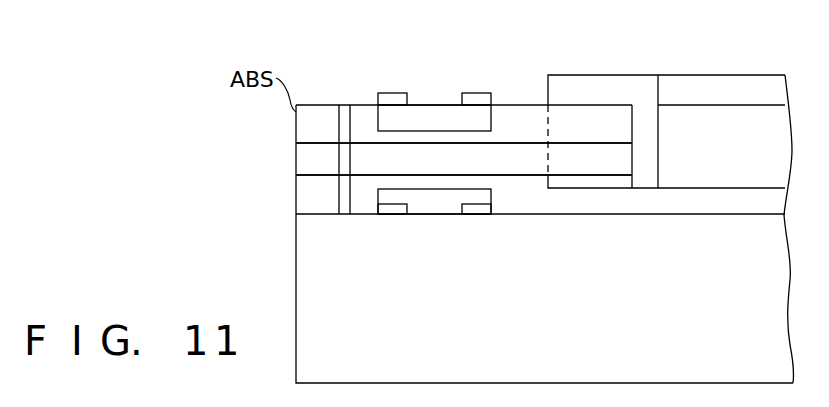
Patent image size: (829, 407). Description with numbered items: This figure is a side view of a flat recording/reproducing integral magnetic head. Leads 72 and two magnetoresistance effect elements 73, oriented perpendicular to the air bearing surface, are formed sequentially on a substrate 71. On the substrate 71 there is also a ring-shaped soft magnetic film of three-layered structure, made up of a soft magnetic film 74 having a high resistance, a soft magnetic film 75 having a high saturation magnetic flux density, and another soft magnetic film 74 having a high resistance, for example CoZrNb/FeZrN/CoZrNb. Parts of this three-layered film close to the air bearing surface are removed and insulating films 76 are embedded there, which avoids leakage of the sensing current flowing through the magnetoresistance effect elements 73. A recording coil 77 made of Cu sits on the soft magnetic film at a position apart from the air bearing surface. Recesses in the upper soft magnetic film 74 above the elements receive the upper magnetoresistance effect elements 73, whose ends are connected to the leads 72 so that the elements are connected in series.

The substrate 71 is at (305, 259).
The leads 72 is at (395, 97).
The magnetoresistance effect elements 73 is at (441, 118).
The soft magnetic film having a high resistance 74 is at (305, 120).
The soft magnetic film having a high saturation magnetic flux density 75 is at (305, 162).
The insulating films 76 is at (345, 105).
The recording coil 77 is at (718, 82).